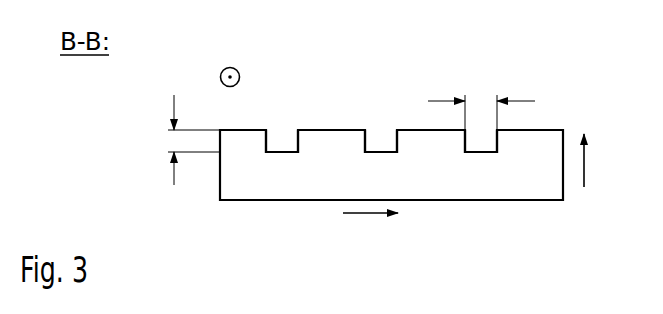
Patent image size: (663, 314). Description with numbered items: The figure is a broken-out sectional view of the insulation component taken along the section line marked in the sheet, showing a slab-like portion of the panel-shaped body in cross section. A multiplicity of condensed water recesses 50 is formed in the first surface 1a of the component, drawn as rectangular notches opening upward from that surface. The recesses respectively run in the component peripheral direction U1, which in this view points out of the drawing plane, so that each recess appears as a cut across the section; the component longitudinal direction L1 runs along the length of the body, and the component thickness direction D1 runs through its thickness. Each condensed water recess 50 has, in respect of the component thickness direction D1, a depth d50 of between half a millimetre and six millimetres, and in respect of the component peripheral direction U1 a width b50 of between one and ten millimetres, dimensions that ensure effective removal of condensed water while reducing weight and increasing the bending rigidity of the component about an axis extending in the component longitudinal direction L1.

The first surface 1a is at (553, 129).
The condensed water recess 50 is at (283, 124).
The width of condensed water recess b50 is at (517, 98).
The depth of condensed water recess d50 is at (173, 182).
The component peripheral direction U1 is at (231, 66).
The component thickness direction D1 is at (597, 160).
The component longitudinal direction L1 is at (370, 230).